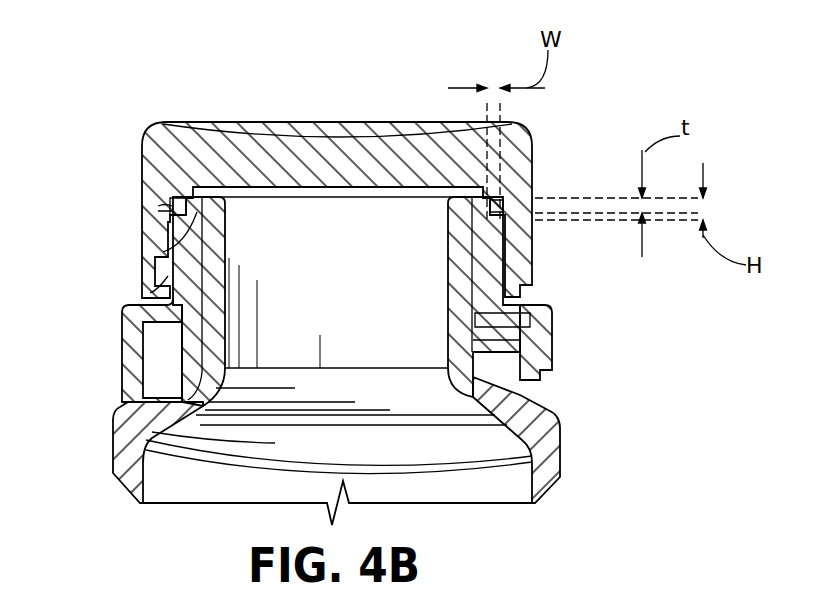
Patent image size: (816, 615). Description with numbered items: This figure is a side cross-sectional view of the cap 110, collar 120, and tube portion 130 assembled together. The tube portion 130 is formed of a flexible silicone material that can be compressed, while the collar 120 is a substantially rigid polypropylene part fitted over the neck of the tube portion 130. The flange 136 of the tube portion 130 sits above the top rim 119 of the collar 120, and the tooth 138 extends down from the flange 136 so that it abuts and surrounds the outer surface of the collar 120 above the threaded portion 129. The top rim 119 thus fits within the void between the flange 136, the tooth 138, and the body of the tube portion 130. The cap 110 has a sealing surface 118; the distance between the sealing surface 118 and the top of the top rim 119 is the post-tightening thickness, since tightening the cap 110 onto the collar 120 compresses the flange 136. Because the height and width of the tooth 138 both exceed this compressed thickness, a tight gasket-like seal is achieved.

The cap 110 is at (157, 136).
The sealing surface 118 is at (507, 198).
The top rim 119 is at (185, 260).
The collar 120 is at (125, 355).
The threaded portion 129 is at (150, 292).
The tube portion 130 is at (120, 460).
The flange 136 is at (155, 213).
The tooth 138 is at (172, 215).